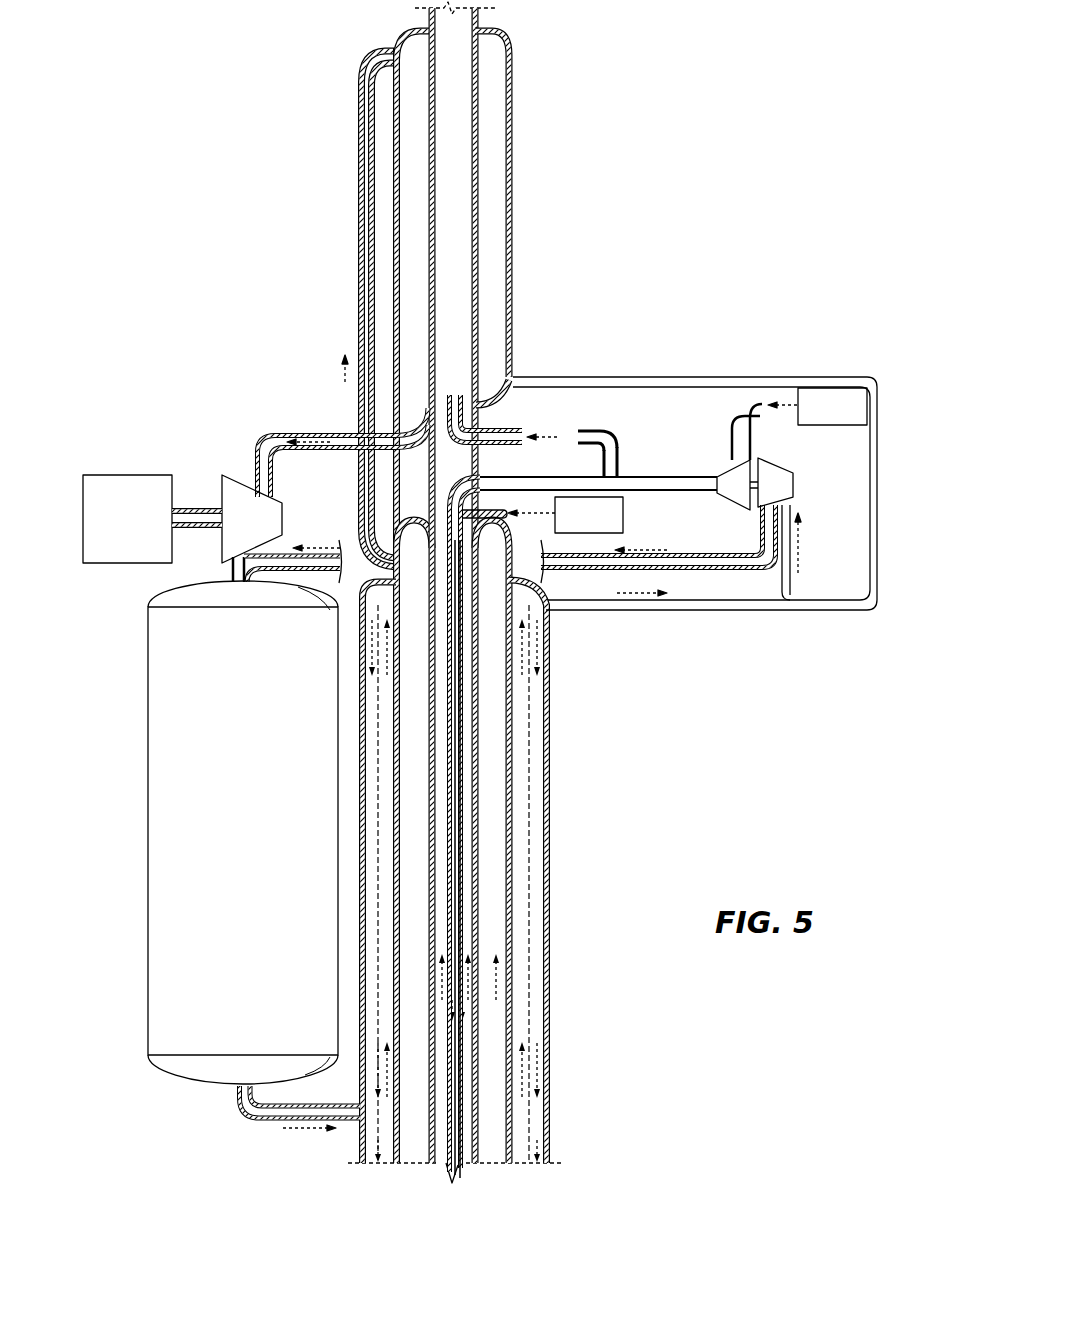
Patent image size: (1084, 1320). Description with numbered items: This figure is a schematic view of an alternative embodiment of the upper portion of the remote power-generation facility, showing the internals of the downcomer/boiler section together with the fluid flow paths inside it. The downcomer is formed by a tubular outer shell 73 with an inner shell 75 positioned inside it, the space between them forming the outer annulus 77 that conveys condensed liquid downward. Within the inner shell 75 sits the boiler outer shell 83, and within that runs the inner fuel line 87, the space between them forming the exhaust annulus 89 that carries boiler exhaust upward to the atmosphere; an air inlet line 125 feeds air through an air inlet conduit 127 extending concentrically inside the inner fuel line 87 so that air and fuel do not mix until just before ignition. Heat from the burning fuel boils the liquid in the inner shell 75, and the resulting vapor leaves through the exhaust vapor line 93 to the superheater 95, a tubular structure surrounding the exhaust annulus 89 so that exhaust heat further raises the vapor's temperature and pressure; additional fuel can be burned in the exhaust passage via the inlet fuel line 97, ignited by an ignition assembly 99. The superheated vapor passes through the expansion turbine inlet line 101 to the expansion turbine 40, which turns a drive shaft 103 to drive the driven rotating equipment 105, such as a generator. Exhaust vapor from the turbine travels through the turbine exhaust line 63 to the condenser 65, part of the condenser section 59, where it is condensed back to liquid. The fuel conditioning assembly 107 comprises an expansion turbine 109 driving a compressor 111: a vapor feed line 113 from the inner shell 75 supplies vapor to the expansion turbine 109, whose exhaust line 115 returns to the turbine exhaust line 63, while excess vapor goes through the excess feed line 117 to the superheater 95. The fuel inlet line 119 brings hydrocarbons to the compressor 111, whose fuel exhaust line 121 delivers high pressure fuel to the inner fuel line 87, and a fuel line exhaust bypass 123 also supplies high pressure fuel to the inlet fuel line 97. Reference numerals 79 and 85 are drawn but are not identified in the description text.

The expansion turbine 40 is at (232, 480).
The condenser section 59 is at (210, 856).
The turbine exhaust line 63 is at (230, 577).
The condenser 65 is at (143, 609).
The outer shell 73 is at (548, 860).
The inner shell 75 is at (515, 832).
The outer annulus 77 is at (536, 1161).
The liner 79 is at (530, 795).
The boiler outer shell 83 is at (480, 1017).
The annular passage 85 is at (498, 1161).
The inner fuel line 87 is at (463, 895).
The exhaust annulus 89 is at (443, 1161).
The exhaust vapor line 93 is at (357, 283).
The superheater 95 is at (513, 222).
The inlet fuel line 97 is at (502, 425).
The ignition assembly 99 is at (452, 399).
The expansion turbine inlet line 101 is at (287, 432).
The drive shaft 103 is at (200, 510).
The driven rotating equipment 105 is at (104, 475).
The fuel conditioning assembly 107 is at (735, 486).
The expansion turbine 109 is at (773, 460).
The compressor 111 is at (723, 470).
The vapor feed line 113 is at (757, 613).
The exhaust line 115 is at (285, 552).
The excess feed line 117 is at (880, 503).
The fuel inlet line 119 is at (748, 403).
The fuel exhaust line 121 is at (628, 476).
The fuel line exhaust bypass 123 is at (590, 430).
The air inlet line 125 is at (493, 510).
The air inlet conduit 127 is at (459, 928).